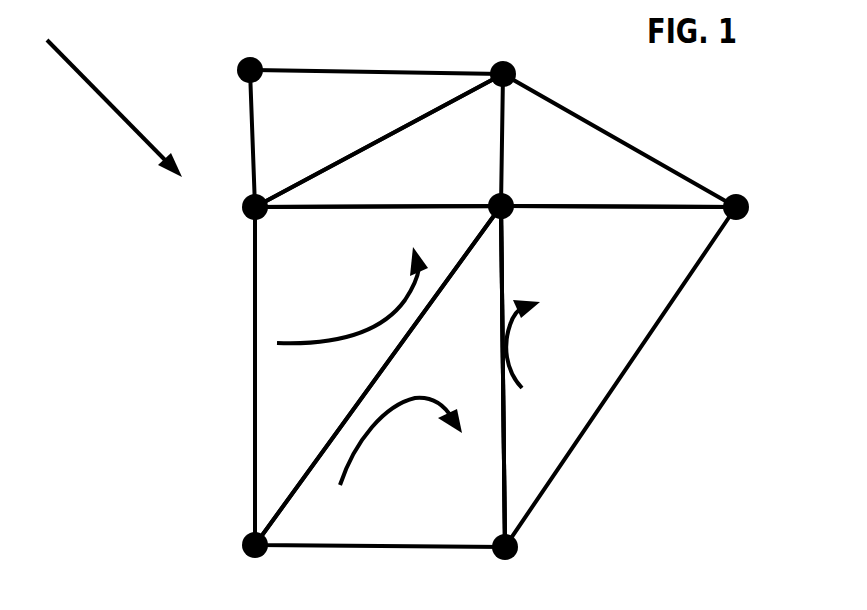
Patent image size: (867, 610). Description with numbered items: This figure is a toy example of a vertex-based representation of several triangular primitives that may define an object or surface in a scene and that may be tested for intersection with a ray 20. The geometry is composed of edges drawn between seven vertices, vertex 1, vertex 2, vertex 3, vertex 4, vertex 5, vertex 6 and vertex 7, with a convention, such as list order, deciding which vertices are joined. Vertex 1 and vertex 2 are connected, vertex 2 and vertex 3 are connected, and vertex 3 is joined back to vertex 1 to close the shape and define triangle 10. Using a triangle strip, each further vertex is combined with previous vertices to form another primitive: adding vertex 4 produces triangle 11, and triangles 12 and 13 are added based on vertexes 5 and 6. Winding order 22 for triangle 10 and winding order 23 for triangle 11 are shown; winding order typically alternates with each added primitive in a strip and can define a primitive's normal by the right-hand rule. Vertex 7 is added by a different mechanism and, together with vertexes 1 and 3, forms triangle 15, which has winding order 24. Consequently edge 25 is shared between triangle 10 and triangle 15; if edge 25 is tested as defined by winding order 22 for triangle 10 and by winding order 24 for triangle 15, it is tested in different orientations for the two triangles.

The vertex 1 is at (500, 533).
The vertex 2 is at (245, 543).
The vertex 3 is at (504, 216).
The vertex 4 is at (264, 218).
The vertex 5 is at (502, 62).
The vertex 6 is at (247, 58).
The vertex 7 is at (718, 228).
The triangle 10 is at (473, 456).
The triangle 11 is at (393, 292).
The triangle 12 is at (482, 172).
The triangle 13 is at (375, 110).
The triangle 15 is at (608, 346).
The ray 20 is at (75, 70).
The winding order 22 is at (404, 398).
The winding order 23 is at (298, 342).
The winding order 24 is at (522, 388).
The edge 25 is at (503, 462).